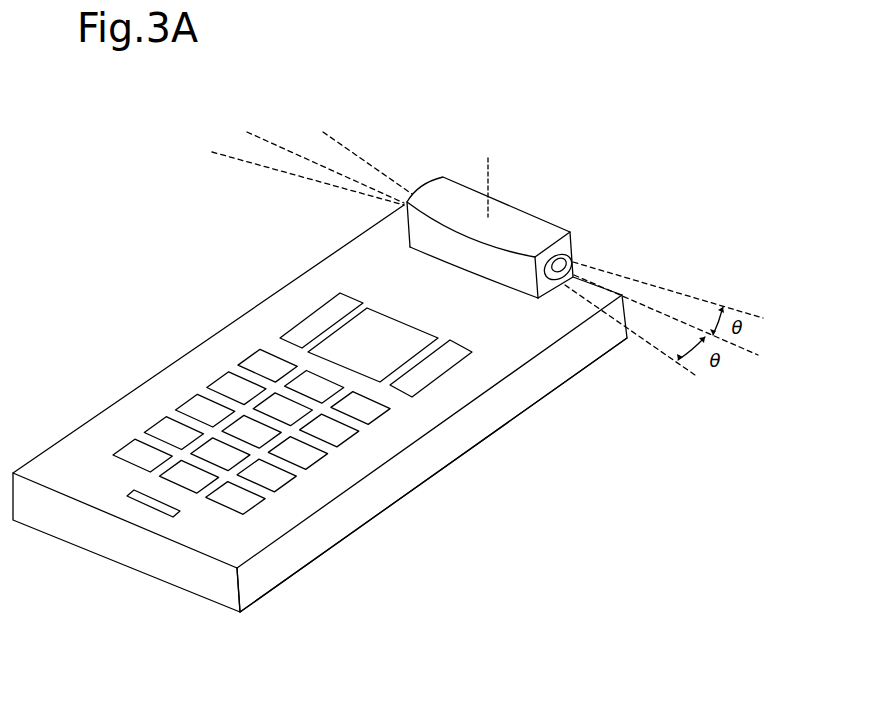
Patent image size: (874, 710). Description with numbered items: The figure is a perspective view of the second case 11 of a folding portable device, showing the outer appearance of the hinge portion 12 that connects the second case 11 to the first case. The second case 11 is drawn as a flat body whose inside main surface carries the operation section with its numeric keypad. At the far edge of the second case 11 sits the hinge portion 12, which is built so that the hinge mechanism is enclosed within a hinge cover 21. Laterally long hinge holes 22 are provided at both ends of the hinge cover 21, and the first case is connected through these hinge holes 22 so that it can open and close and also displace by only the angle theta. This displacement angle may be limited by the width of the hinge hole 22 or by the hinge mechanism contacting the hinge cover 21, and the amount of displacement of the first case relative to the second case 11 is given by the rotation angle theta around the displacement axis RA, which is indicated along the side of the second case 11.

The second case 11 is at (320, 408).
The hinge portion 12 is at (540, 181).
The hinge cover 21 is at (518, 217).
The hinge hole 22 is at (572, 246).
The displacement axis RA is at (507, 425).